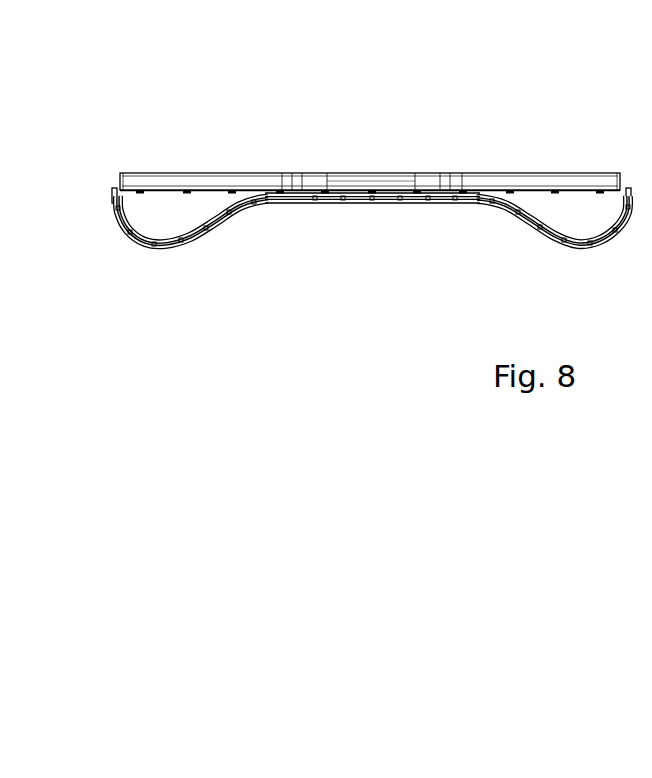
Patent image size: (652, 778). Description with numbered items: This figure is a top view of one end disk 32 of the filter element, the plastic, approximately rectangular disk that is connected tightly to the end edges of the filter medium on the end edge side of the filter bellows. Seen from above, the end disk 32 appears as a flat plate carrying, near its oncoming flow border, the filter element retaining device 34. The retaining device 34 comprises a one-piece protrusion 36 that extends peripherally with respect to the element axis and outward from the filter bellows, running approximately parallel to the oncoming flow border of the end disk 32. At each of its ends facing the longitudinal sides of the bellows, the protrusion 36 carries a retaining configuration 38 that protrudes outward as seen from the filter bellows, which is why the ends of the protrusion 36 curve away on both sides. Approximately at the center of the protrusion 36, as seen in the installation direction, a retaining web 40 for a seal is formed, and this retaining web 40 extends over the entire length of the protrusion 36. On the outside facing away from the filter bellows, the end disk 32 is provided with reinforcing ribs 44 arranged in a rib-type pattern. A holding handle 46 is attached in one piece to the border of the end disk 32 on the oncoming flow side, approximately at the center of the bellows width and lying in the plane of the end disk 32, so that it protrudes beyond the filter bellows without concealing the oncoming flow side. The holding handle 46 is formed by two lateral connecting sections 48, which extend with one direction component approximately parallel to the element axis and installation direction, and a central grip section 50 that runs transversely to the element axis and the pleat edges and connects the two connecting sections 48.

The end disk 32 is at (334, 172).
The filter element retaining device 34 is at (108, 205).
The protrusion 36 is at (331, 192).
The retaining configuration 38 is at (155, 222).
The retaining web 40 is at (524, 214).
The reinforcing ribs 44 is at (186, 188).
The holding handle 46 is at (388, 172).
The connecting sections 48 is at (300, 175).
The central grip section 50 is at (352, 178).